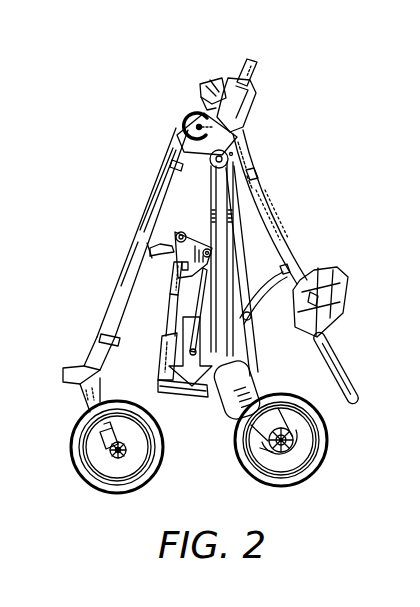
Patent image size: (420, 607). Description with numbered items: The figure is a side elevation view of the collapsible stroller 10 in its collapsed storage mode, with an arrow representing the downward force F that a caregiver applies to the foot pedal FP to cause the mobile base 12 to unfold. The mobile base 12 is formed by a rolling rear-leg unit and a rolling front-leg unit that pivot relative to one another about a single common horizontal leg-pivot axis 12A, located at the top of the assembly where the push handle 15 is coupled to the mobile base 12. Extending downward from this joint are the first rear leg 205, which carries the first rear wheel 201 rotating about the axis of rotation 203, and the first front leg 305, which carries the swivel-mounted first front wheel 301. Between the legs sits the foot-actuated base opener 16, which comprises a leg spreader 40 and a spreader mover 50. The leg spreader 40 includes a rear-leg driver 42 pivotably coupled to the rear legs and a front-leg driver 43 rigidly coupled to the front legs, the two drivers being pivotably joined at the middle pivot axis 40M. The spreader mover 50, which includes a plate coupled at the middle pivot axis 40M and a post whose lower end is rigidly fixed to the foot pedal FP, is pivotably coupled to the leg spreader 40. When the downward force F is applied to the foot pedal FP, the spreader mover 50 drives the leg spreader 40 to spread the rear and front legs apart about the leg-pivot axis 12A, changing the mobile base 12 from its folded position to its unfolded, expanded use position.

The collapsible stroller 10 is at (294, 72).
The leg-pivot axis 12A is at (244, 116).
The mobile base 12 is at (92, 310).
The push handle 15 is at (282, 212).
The foot-actuated base opener 16 is at (190, 218).
The first rear leg 205 is at (233, 218).
The leg spreader 40 is at (262, 322).
The middle pivot axis 40M is at (176, 228).
The first front leg 305 is at (132, 256).
The front-leg driver 43 is at (150, 257).
The rear-leg driver 42 is at (272, 362).
The spreader mover 50 is at (146, 370).
The first front wheel 301 is at (110, 492).
The first rear wheel 201 is at (306, 480).
The axis of rotation 203 is at (292, 438).
The downward force F is at (173, 328).
The foot pedal FP is at (184, 410).